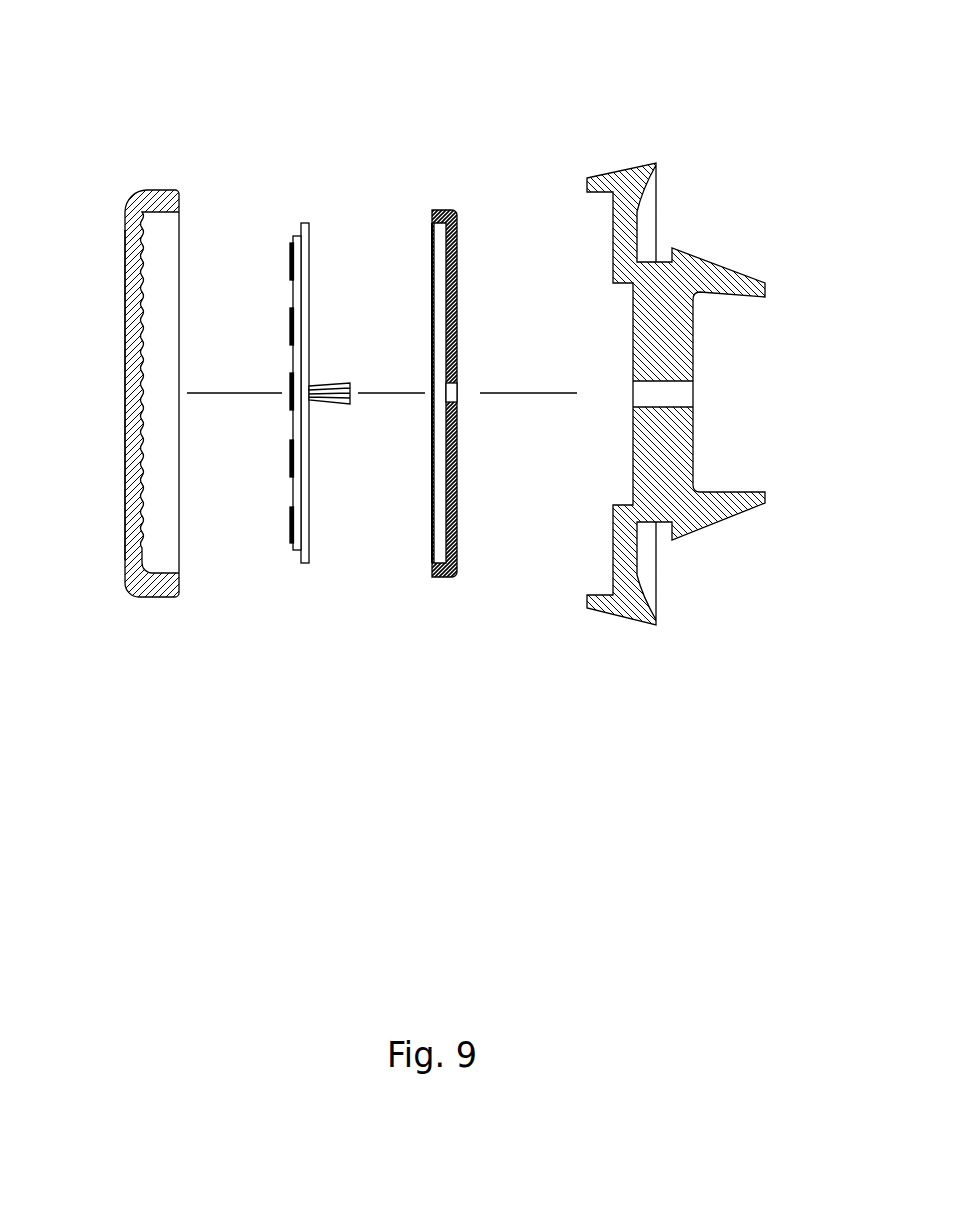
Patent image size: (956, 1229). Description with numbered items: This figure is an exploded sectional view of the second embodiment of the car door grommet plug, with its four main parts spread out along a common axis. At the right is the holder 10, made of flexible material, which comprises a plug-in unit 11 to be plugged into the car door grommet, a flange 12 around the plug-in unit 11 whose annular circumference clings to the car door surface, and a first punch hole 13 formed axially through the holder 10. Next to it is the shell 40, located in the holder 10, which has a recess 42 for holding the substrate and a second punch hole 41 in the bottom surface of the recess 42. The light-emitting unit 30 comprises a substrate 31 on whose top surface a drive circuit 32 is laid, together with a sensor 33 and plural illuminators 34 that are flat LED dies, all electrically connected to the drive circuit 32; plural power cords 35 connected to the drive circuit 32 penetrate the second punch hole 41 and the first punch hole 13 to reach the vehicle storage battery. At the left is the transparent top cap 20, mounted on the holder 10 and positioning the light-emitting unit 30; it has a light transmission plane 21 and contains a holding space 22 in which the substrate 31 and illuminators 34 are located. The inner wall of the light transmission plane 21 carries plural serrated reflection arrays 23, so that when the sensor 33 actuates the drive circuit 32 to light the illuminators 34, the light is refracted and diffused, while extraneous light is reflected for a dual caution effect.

The holder 10 is at (666, 321).
The plug-in unit 11 is at (720, 265).
The flange 12 is at (625, 185).
The first punch hole 13 is at (680, 390).
The top cap 20 is at (143, 188).
The light transmission plane 21 is at (128, 243).
The holding space 22 is at (165, 531).
The serrated reflection arrays 23 is at (143, 285).
The light-emitting unit 30 is at (311, 378).
The substrate 31 is at (305, 513).
The drive circuit 32 is at (297, 360).
The sensor 33 is at (292, 402).
The illuminators 34 is at (290, 530).
The power cords 35 is at (322, 380).
The shell 40 is at (444, 346).
The second punch hole 41 is at (455, 395).
The recess 42 is at (432, 483).